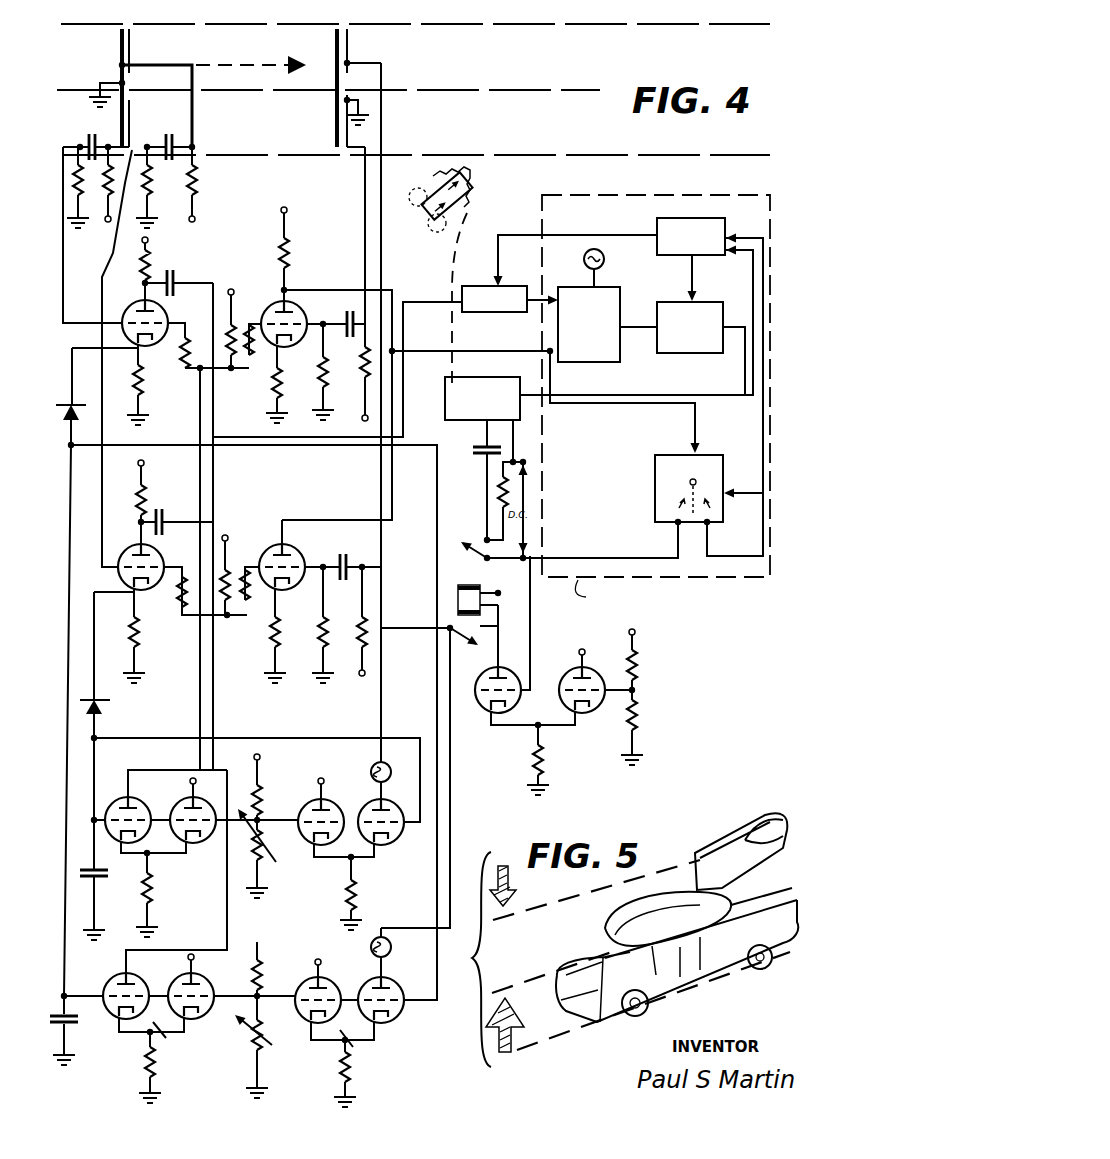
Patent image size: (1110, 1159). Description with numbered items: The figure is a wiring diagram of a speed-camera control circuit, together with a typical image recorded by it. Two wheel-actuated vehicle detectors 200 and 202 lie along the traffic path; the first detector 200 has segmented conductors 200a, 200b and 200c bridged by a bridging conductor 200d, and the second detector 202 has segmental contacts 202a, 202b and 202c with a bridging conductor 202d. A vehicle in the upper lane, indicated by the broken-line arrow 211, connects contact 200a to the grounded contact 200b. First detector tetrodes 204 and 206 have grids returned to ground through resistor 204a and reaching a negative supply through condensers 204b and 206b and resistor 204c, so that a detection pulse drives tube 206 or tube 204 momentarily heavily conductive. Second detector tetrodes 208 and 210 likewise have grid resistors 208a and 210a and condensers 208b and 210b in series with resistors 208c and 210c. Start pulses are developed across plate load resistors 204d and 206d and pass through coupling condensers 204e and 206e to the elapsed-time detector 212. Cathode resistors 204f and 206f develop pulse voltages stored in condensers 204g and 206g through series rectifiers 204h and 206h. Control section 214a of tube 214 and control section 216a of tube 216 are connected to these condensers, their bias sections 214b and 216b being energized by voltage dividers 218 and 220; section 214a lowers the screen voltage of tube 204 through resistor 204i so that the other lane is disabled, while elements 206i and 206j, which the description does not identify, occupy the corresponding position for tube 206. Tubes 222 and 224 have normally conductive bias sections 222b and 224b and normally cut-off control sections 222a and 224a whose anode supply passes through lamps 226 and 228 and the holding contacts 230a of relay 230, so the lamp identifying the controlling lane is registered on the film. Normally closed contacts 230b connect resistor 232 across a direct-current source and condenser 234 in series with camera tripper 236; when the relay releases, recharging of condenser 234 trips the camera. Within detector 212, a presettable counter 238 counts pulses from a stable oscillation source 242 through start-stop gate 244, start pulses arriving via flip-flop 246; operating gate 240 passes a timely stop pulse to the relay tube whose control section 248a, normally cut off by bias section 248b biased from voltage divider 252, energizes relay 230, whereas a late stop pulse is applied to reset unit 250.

In FIG. 4, the wheel-actuated vehicle detector 200 is at (108, 67).
In FIG. 4, the segmented conductor 200a is at (118, 40).
In FIG. 4, the segmented conductor 200b is at (130, 84).
In FIG. 4, the segmented conductor 200c is at (130, 132).
In FIG. 4, the bridging conductor 200d is at (133, 47).
In FIG. 4, the wheel-actuated vehicle detector 202 is at (322, 131).
In FIG. 4, the segmental contact 202a is at (351, 56).
In FIG. 4, the segmental contact 202b is at (359, 82).
In FIG. 4, the segmental contact 202c is at (361, 141).
In FIG. 4, the bridging conductor 202d is at (333, 112).
In FIG. 4, the first detector tetrode 204 is at (118, 318).
In FIG. 4, the resistor 204a is at (63, 162).
In FIG. 4, the condenser 204b is at (90, 133).
In FIG. 4, the resistor 204c is at (108, 200).
In FIG. 4, the plate load resistor 204d is at (152, 262).
In FIG. 4, the coupling condenser 204e is at (176, 280).
In FIG. 4, the cathode resistor 204f is at (141, 385).
In FIG. 4, the condenser 204g is at (73, 1027).
In FIG. 4, the series rectifier 204h is at (66, 428).
In FIG. 4, the resistor 204i is at (231, 362).
In FIG. 4, the first detector tetrode 206 is at (130, 544).
In FIG. 4, the condenser 206b is at (200, 184).
In FIG. 4, the plate load resistor 206d is at (147, 491).
In FIG. 4, the coupling condenser 206e is at (172, 500).
In FIG. 4, the cathode resistor 206f is at (139, 640).
In FIG. 4, the condenser 206g is at (100, 879).
In FIG. 4, the series rectifier 206h is at (104, 708).
In FIG. 4, the plate load resistor 206i is at (180, 592).
In FIG. 4, the grid resistors 206j is at (227, 605).
In FIG. 4, the second detector tetrode 208 is at (318, 285).
In FIG. 4, the resistor 208a is at (324, 372).
In FIG. 4, the condenser 208b is at (352, 311).
In FIG. 4, the resistor 208c is at (363, 380).
In FIG. 4, the second detector tetrode 210 is at (297, 539).
In FIG. 4, the resistor 210a is at (327, 619).
In FIG. 4, the condenser 210b is at (354, 542).
In FIG. 4, the resistor 210c is at (367, 619).
In FIG. 4, the broken-line arrow 211 is at (275, 52).
In FIG. 4, the elapsed-time detector 212 is at (668, 188).
In FIG. 4, the cathode phase-inverter control tube 214 is at (158, 766).
In FIG. 4, the control section 214a is at (184, 801).
In FIG. 4, the bias section 214b is at (206, 846).
In FIG. 4, the cathode phase-inverter control tube 216 is at (163, 1041).
In FIG. 4, the control section 216a is at (113, 972).
In FIG. 4, the bias section 216b is at (192, 1021).
In FIG. 4, the voltage divider 218 is at (263, 800).
In FIG. 4, the voltage divider 220 is at (260, 963).
In FIG. 4, the tube 222 is at (335, 793).
In FIG. 4, the control section 222a is at (393, 846).
In FIG. 4, the bias section 222b is at (312, 848).
In FIG. 4, the tube 224 is at (352, 1033).
In FIG. 4, the control section 224a is at (388, 1021).
In FIG. 4, the bias section 224b is at (350, 971).
In FIG. 4, the lamp 226 is at (416, 183).
In FIG. 5, the lamp 226 is at (512, 878).
In FIG. 4, the lamp 228 is at (428, 231).
In FIG. 5, the lamp 228 is at (548, 1004).
In FIG. 4, the relay 230 is at (458, 590).
In FIG. 4, the holding contacts 230a is at (456, 637).
In FIG. 4, the contacts 230b is at (461, 544).
In FIG. 4, the resistor 232 is at (500, 492).
In FIG. 4, the condenser 234 is at (473, 448).
In FIG. 4, the camera tripper 236 is at (506, 376).
In FIG. 4, the presettable counter 238 is at (706, 354).
In FIG. 4, the operating gate 240 is at (655, 481).
In FIG. 4, the source of oscillations 242 is at (604, 262).
In FIG. 4, the start-stop gate 244 is at (621, 300).
In FIG. 4, the flip-flop 246 is at (485, 312).
In FIG. 4, the control section 248a is at (492, 724).
In FIG. 4, the bias section 248b is at (599, 723).
In FIG. 4, the reset unit 250 is at (657, 230).
In FIG. 4, the voltage divider 252 is at (637, 712).